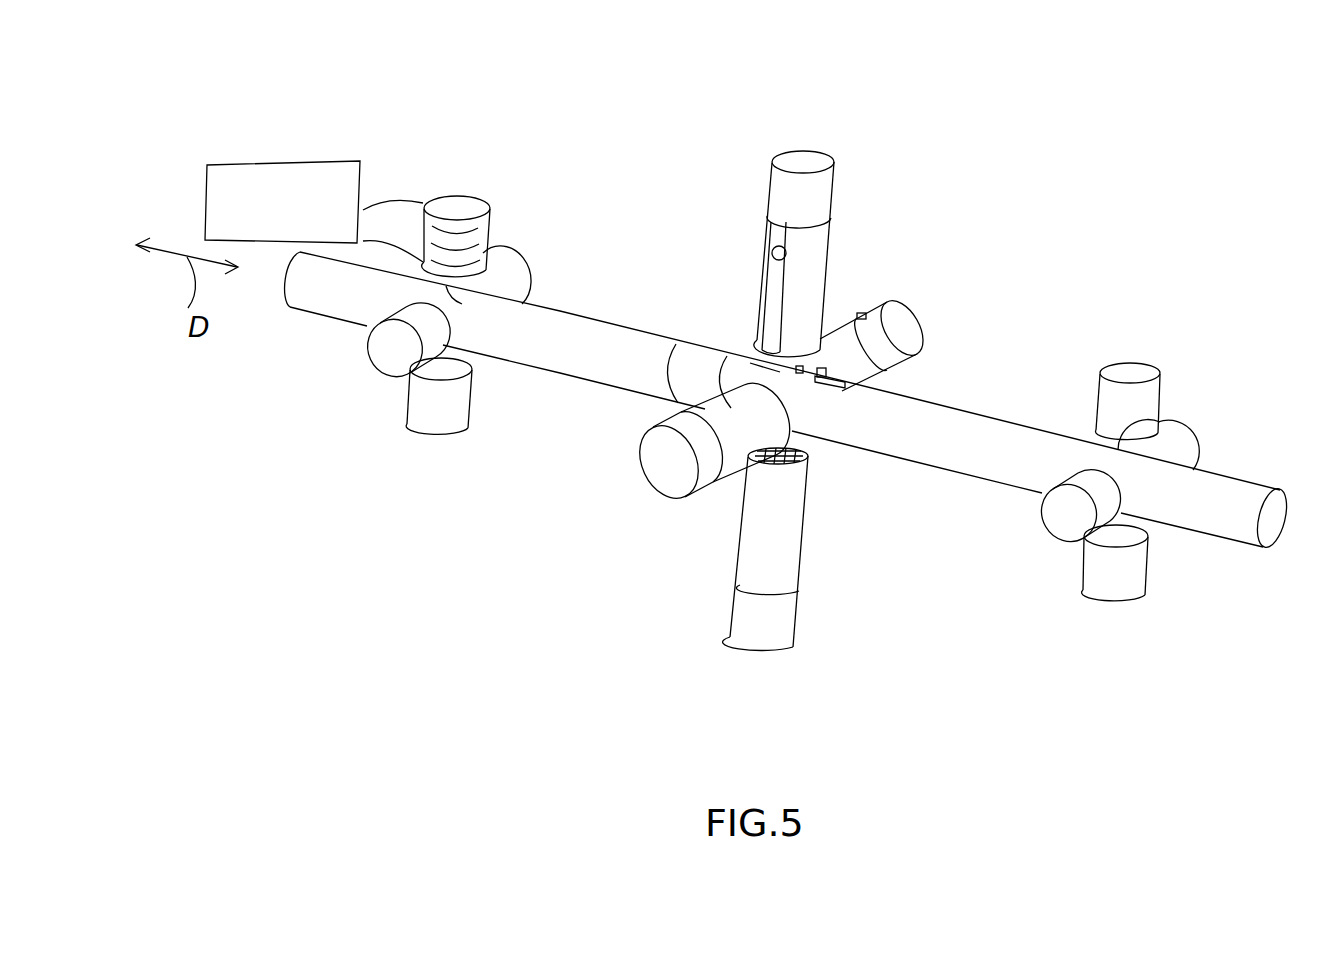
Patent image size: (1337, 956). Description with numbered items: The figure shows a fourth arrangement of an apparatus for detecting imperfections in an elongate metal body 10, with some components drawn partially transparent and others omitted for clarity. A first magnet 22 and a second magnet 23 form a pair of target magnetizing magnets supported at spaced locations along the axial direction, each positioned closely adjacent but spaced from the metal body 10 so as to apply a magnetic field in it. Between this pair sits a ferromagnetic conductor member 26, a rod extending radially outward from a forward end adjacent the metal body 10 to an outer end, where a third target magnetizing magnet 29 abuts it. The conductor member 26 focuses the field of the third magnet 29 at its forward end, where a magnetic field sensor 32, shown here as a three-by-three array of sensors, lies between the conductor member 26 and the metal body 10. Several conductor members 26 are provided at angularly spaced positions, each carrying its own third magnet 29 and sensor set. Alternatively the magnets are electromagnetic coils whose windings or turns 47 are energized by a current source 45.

The elongate metal body 10 is at (977, 414).
The first magnet 22 is at (544, 138).
The second magnet 23 is at (1212, 381).
The conductor member 26 is at (828, 265).
The third target magnetizing magnet 29 is at (832, 193).
The magnetic field sensor 32 is at (845, 363).
The current source 45 is at (280, 163).
The windings or turns 47 is at (465, 232).